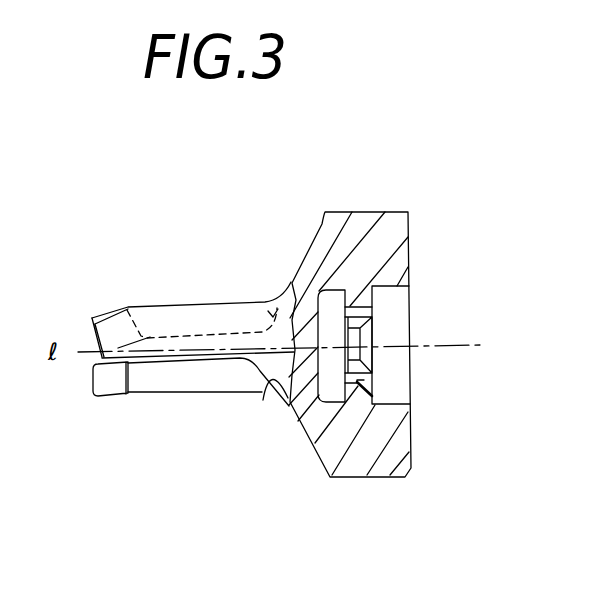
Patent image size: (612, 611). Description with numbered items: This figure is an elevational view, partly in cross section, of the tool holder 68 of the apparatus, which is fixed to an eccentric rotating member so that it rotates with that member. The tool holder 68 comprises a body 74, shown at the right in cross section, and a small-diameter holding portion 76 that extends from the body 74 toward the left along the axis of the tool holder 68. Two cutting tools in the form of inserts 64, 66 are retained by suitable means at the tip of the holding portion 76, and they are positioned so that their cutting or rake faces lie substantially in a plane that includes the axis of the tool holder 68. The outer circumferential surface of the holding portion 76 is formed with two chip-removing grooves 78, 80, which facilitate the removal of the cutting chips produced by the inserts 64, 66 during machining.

The insert 64 is at (112, 394).
The insert 66 is at (127, 305).
The tool holder 68 is at (362, 197).
The body 74 is at (356, 467).
The holding portion 76 is at (197, 378).
The chip-removing groove 78 is at (263, 400).
The chip-removing groove 80 is at (267, 308).